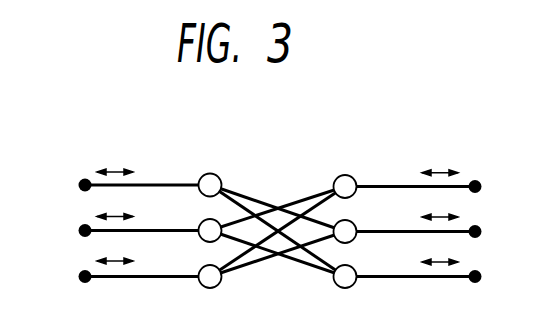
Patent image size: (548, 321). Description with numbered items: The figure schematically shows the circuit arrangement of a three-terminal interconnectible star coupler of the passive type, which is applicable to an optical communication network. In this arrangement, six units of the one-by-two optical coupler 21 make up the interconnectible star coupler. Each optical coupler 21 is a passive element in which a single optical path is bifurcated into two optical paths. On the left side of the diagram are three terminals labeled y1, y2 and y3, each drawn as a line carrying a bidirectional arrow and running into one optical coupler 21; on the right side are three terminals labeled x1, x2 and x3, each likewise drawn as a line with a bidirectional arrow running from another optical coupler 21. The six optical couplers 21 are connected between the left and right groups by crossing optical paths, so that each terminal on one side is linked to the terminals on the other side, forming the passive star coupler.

The 1×2 optical coupler 21 is at (201, 268).
The input line y1 is at (116, 181).
The input line y2 is at (116, 226).
The input line y3 is at (116, 271).
The output line x1 is at (435, 184).
The output line x2 is at (435, 229).
The output line x3 is at (435, 274).